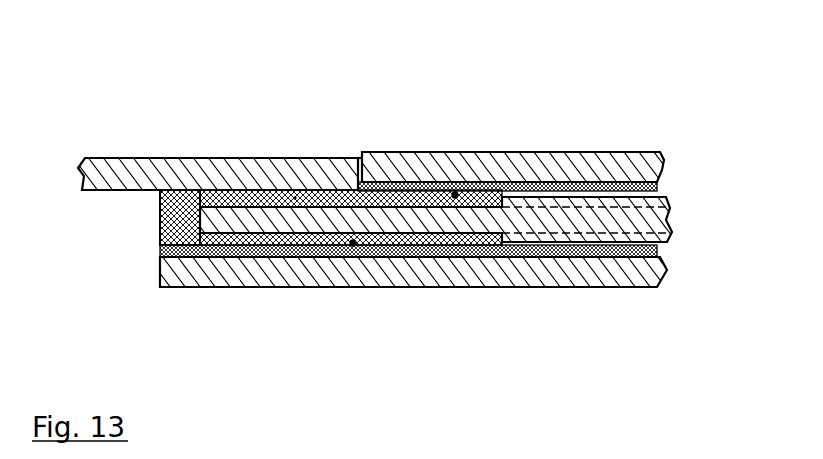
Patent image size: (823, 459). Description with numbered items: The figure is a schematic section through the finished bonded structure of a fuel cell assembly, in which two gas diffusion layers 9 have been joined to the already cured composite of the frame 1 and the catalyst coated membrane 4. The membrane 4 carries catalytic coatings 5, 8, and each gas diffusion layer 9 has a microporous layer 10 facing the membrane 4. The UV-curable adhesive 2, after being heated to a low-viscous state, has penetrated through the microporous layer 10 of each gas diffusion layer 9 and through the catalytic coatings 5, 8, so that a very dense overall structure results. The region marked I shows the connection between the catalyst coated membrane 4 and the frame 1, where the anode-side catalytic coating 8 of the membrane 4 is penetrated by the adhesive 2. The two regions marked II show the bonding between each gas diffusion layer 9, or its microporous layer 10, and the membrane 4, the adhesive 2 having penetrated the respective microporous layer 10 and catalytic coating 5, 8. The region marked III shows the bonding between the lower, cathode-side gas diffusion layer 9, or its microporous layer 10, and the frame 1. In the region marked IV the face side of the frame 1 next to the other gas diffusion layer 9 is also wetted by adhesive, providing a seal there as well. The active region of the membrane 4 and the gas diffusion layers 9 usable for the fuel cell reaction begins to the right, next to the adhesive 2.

The frame 1 is at (127, 173).
The adhesive 2 is at (176, 200).
The membrane 4 is at (647, 220).
The catalytic coating 5 is at (555, 243).
The catalytic coating 8 is at (575, 198).
The gas diffusion layer 9 is at (447, 152).
The microporous layer 10 is at (625, 183).
The region I is at (295, 198).
The regions II is at (353, 243).
The region III is at (182, 218).
The region IV is at (358, 158).